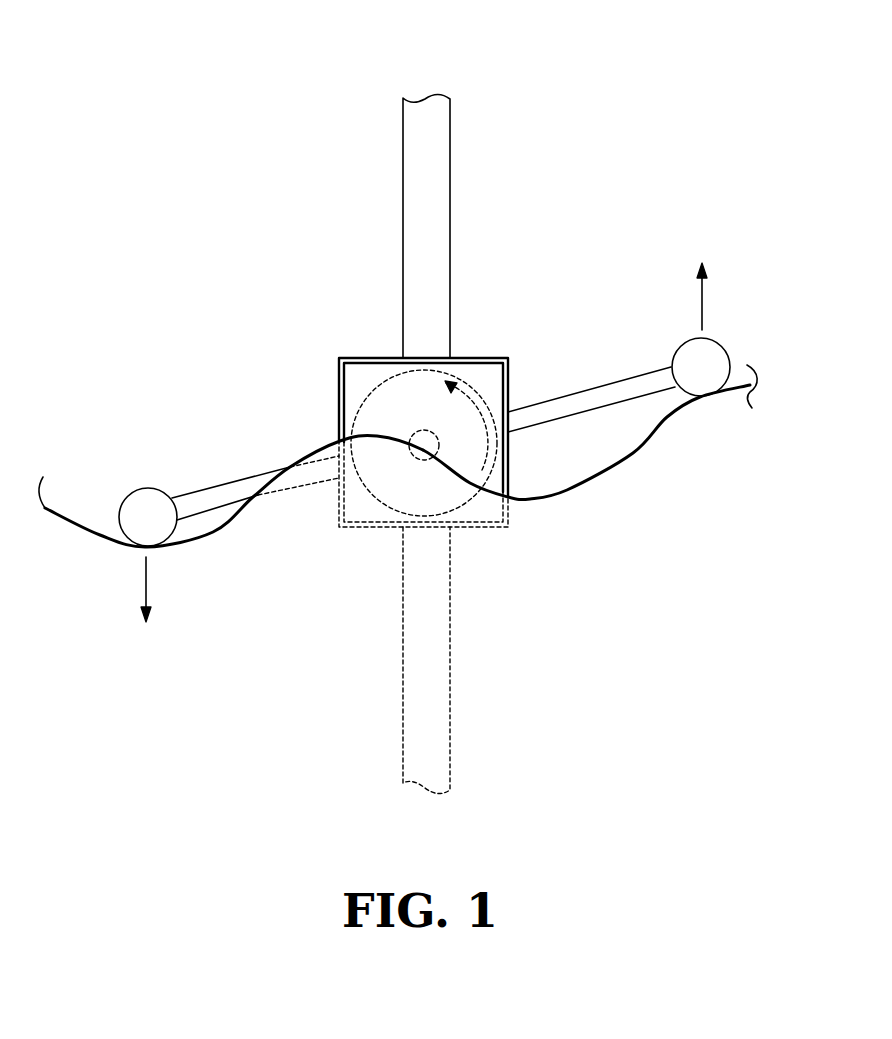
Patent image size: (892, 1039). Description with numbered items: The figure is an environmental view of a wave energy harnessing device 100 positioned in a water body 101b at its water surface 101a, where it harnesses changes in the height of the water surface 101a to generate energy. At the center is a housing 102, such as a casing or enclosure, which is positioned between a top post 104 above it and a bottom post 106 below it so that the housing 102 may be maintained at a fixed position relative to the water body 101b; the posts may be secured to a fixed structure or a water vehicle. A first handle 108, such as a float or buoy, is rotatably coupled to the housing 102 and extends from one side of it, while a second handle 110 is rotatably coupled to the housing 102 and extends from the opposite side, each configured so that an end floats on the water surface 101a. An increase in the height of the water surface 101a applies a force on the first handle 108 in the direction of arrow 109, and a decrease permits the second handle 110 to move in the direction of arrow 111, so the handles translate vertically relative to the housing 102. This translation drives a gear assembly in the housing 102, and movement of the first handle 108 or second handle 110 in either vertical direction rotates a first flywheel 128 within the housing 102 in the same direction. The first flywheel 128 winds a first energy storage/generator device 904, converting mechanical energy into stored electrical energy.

The wave energy harnessing device 100 is at (270, 101).
The water surface 101a is at (95, 530).
The water body 101b is at (213, 532).
The housing 102 is at (361, 354).
The top post 104 is at (437, 93).
The bottom post 106 is at (450, 660).
The first handle 108 is at (716, 343).
The arrow 109 is at (700, 312).
The second handle 110 is at (210, 490).
The arrow 111 is at (143, 600).
The first flywheel 128 is at (346, 415).
The first energy storage/generator device 904 is at (483, 356).